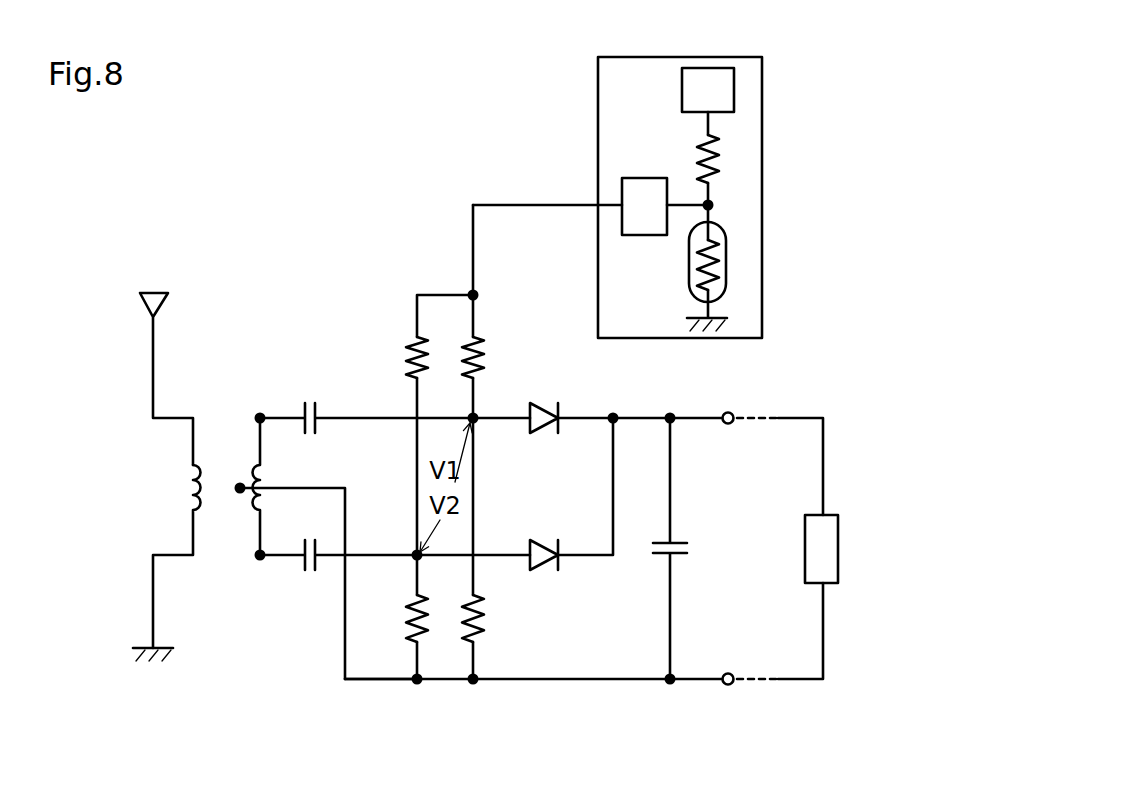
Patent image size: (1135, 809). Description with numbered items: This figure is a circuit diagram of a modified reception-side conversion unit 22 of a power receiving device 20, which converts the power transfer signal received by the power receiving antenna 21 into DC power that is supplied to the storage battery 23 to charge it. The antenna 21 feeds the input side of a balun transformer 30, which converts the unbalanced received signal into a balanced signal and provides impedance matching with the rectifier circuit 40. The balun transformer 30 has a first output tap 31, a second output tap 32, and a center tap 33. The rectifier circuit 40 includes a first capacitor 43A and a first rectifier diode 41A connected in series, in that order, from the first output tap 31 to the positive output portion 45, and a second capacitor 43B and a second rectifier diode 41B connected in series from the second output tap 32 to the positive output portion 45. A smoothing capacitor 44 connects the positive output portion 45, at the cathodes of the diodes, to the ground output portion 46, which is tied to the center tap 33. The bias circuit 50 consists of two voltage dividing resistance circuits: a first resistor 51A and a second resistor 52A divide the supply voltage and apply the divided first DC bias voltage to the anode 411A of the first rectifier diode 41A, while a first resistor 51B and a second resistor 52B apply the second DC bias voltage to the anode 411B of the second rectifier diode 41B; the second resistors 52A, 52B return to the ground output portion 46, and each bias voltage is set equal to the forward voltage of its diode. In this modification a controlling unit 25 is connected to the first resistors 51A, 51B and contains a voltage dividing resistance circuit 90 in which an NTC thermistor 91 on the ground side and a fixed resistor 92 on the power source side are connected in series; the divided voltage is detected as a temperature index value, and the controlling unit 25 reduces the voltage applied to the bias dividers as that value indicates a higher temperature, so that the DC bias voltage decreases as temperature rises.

The power receiving antenna 21 is at (141, 301).
The balun transformer 30 is at (239, 509).
The first output tap 31 is at (260, 412).
The second output tap 32 is at (257, 562).
The center tap 33 is at (243, 493).
The first capacitor 43A is at (299, 432).
The second capacitor 43B is at (300, 571).
The bias circuit 50 is at (446, 445).
The first resistor 51A is at (483, 341).
The first resistor 51B is at (407, 342).
The second resistor 52A is at (478, 622).
The second resistor 52B is at (411, 621).
The rectifier circuit 40 is at (525, 472).
The first rectifier diode 41A is at (561, 411).
The second rectifier diode 41B is at (561, 561).
The anode of the first rectifier diode 411A is at (507, 421).
The anode of the second rectifier diode 411B is at (507, 552).
The smoothing capacitor 44 is at (681, 557).
The positive output portion 45 is at (728, 412).
The ground output portion 46 is at (734, 684).
The storage battery 23 is at (839, 548).
The reception-side conversion unit 22 is at (622, 509).
The power receiving device 20 is at (614, 490).
The controlling unit 25 is at (669, 197).
The voltage dividing resistance circuit 90 is at (777, 218).
The NTC thermistor 91 is at (751, 262).
The fixed resistor 92 is at (722, 163).